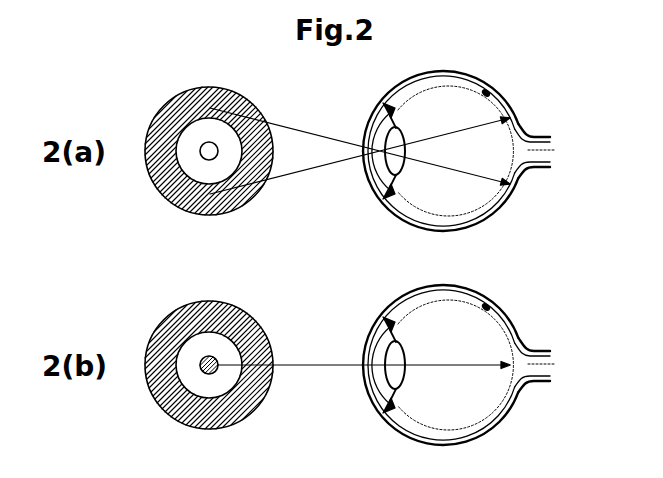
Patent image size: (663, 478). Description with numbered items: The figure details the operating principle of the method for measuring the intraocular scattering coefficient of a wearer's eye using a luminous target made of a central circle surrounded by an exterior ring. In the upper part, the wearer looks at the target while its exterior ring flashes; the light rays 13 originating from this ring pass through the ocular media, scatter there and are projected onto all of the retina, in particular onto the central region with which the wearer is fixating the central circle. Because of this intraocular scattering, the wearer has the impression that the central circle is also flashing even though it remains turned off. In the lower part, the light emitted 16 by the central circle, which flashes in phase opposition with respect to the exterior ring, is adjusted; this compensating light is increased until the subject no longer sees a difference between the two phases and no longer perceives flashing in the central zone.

The light rays 13 is at (302, 130).
The light emitted 16 is at (364, 335).